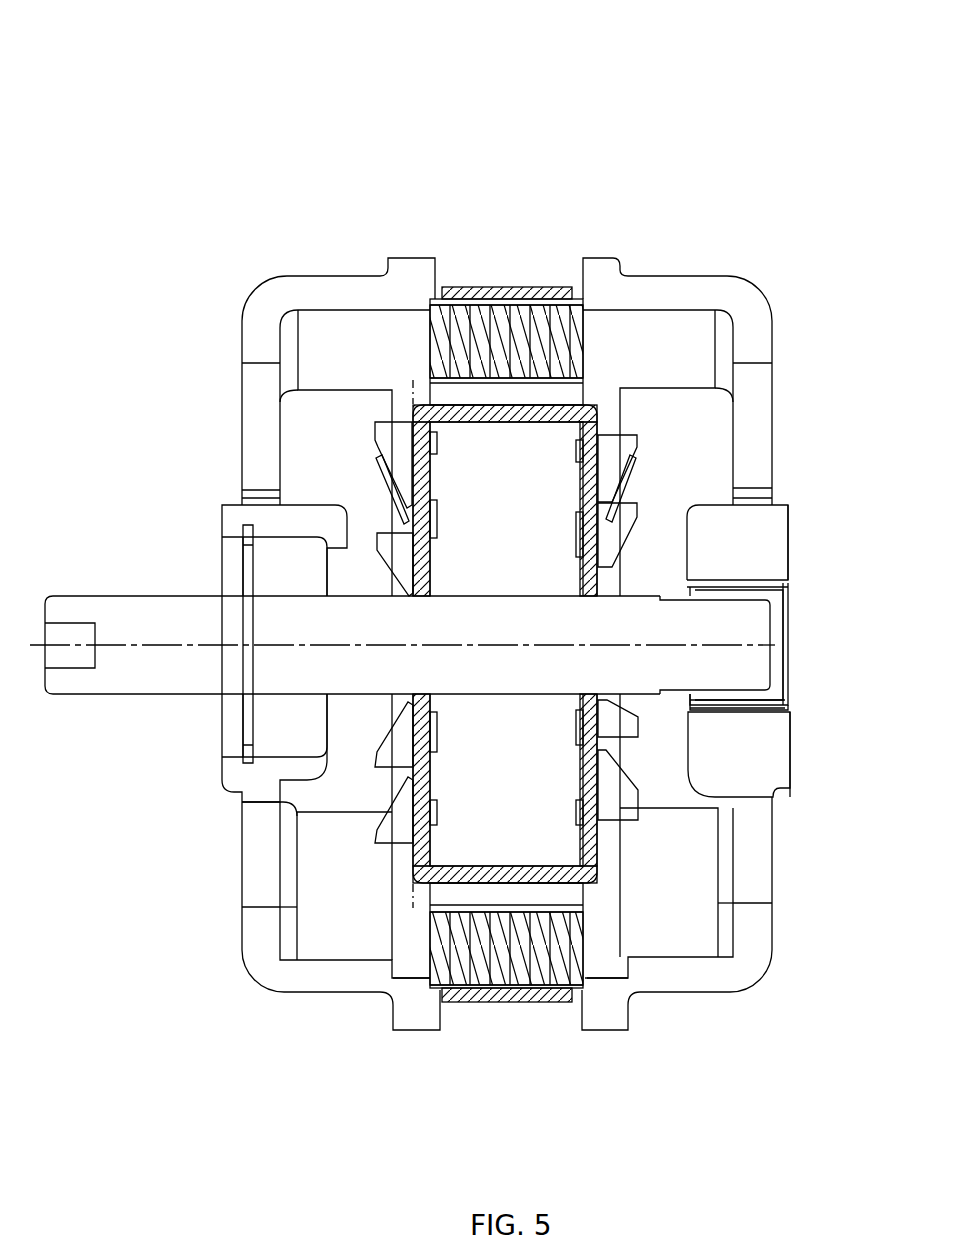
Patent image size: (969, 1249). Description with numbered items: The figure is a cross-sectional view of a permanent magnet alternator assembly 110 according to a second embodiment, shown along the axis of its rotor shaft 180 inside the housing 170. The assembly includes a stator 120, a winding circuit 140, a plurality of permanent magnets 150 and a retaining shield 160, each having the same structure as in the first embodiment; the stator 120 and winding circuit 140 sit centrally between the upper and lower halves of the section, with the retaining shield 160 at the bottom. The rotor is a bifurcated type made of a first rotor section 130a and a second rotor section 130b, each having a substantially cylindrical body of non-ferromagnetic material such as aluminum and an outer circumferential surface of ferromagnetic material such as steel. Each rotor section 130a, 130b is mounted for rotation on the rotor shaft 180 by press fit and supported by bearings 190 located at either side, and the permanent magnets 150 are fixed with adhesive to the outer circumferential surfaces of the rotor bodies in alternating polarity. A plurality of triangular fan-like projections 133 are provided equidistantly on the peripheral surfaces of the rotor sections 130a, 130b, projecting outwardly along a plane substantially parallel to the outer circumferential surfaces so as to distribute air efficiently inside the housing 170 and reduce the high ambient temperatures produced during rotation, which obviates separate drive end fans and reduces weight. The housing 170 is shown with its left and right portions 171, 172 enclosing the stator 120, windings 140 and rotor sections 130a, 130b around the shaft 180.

The permanent magnet alternator assembly 110 is at (156, 134).
The stator 120 is at (483, 290).
The winding circuit 140 is at (558, 307).
The permanent magnets 150 is at (440, 897).
The first rotor section 130a is at (417, 787).
The second rotor section 130b is at (605, 752).
The fan-like projections 133 is at (383, 738).
The retaining shield 160 is at (427, 978).
The housing 170 is at (777, 311).
The first housing bracket 171 is at (318, 293).
The second housing bracket 172 is at (657, 292).
The rotor shaft 180 is at (127, 625).
The bearing 190 is at (240, 512).